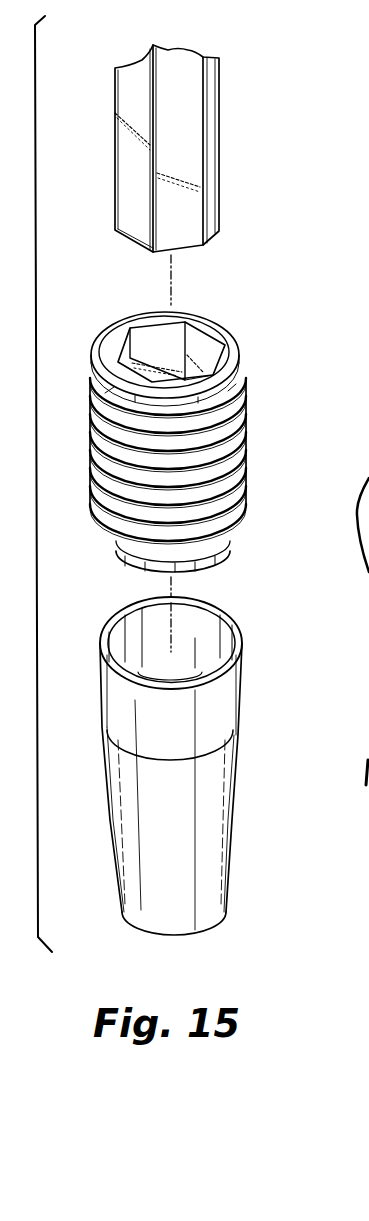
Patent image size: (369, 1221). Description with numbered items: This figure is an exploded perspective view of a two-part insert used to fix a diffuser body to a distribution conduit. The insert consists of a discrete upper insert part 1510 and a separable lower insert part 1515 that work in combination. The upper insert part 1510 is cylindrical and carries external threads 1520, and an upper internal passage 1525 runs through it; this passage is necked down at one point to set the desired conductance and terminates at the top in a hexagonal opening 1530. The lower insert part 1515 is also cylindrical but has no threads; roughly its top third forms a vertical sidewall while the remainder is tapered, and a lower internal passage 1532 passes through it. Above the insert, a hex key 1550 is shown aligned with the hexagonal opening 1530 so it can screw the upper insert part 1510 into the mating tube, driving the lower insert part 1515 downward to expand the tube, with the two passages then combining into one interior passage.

The upper insert part 1510 is at (173, 428).
The lower insert part 1515 is at (149, 756).
The external threads 1520 is at (92, 463).
The upper internal passage 1525 is at (153, 348).
The hexagonal opening 1530 is at (203, 353).
The lower internal passage 1532 is at (152, 632).
The hex key 1550 is at (101, 128).